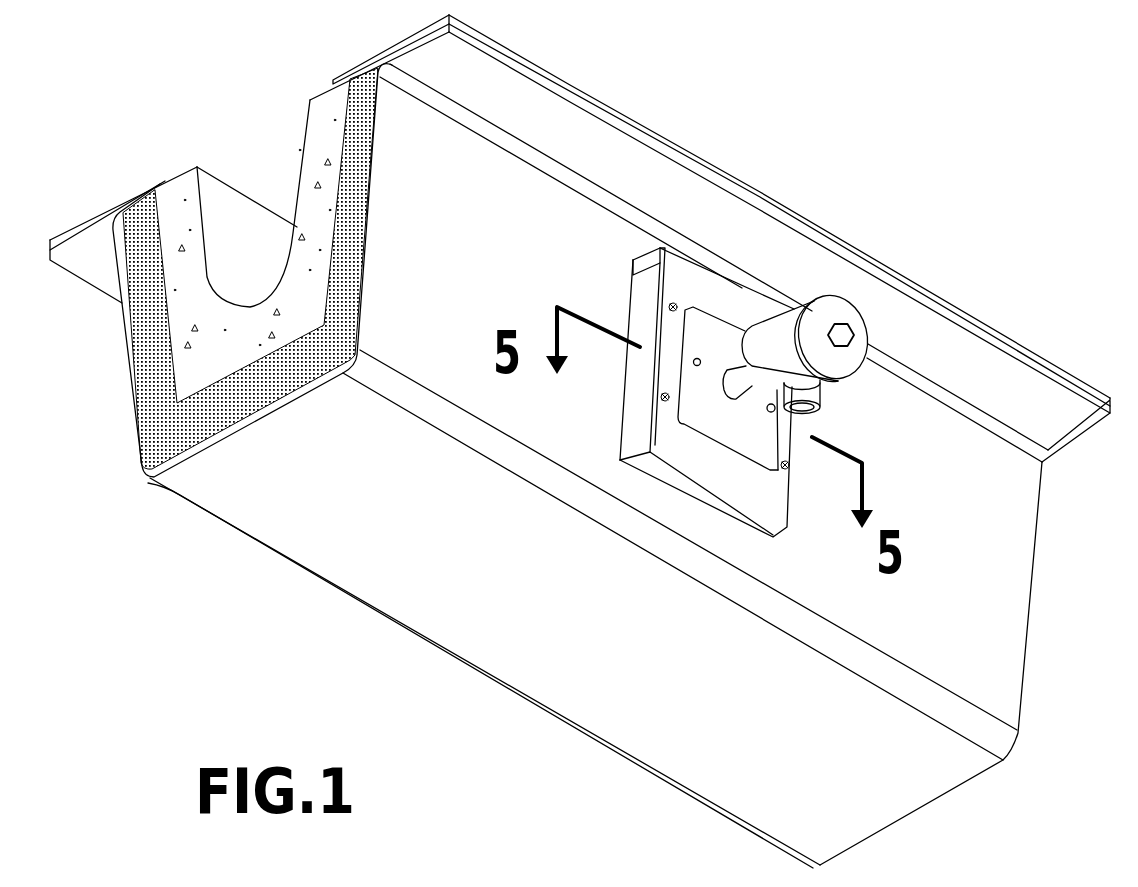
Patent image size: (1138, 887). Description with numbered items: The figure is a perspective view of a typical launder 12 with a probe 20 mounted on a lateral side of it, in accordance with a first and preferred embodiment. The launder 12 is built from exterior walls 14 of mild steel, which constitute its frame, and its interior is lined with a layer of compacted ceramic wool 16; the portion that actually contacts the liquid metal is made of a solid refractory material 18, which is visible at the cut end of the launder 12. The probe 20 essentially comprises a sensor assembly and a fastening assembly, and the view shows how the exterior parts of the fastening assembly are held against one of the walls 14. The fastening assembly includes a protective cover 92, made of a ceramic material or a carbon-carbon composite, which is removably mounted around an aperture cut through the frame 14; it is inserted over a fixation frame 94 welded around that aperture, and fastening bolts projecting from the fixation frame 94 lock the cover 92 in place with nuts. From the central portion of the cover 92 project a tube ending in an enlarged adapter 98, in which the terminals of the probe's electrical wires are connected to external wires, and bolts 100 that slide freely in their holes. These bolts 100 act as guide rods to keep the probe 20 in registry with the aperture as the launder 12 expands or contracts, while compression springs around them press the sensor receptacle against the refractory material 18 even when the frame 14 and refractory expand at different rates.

The launder 12 is at (770, 126).
The exterior walls 14 is at (1027, 358).
The layer of compacted ceramic wool 16 is at (155, 455).
The solid refractory material 18 is at (238, 203).
The probe 20 is at (842, 296).
The protective cover 92 is at (673, 487).
The fixation frame 94 is at (750, 543).
The enlarged adapter 98 is at (856, 322).
The bolts 100 is at (698, 358).